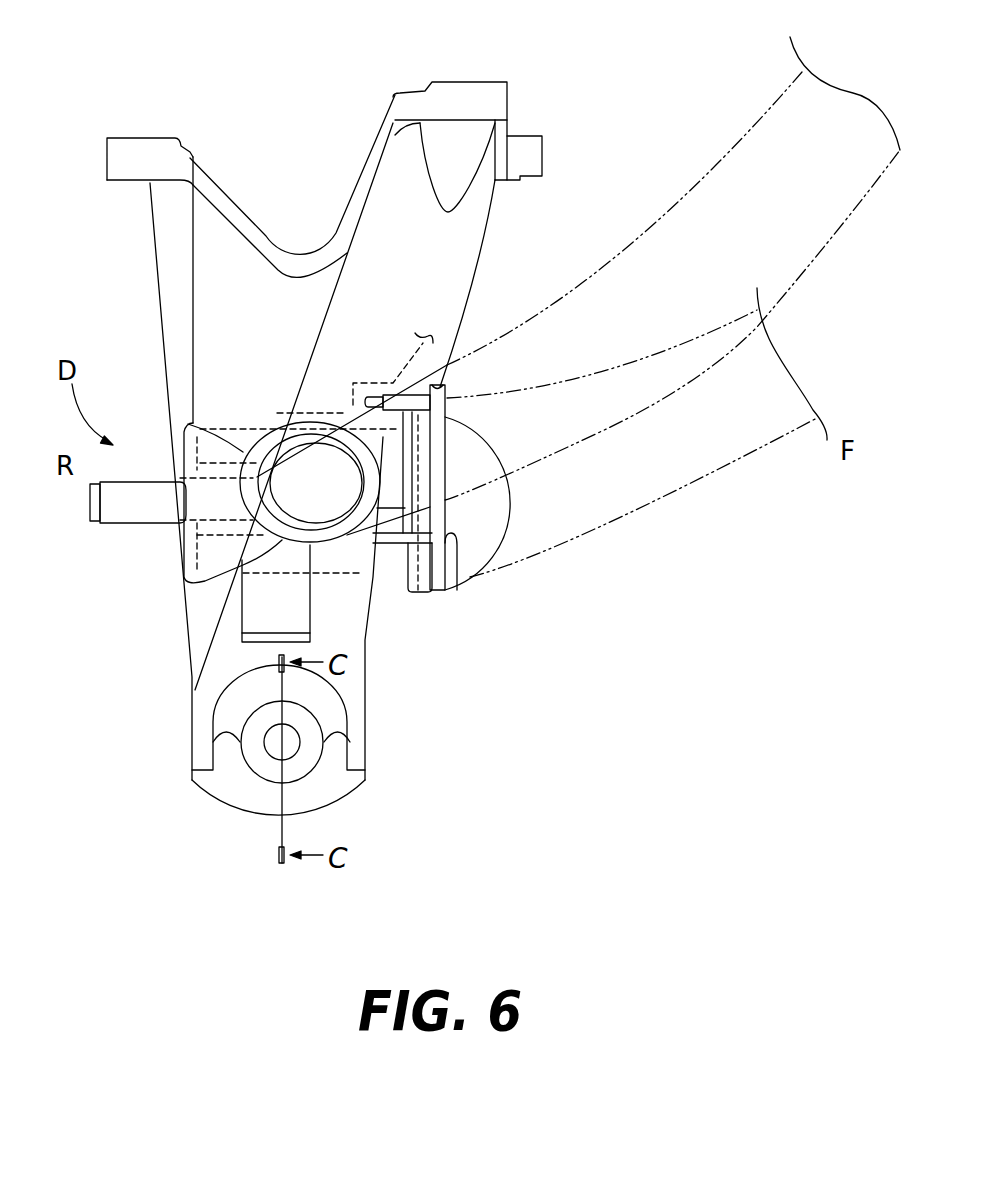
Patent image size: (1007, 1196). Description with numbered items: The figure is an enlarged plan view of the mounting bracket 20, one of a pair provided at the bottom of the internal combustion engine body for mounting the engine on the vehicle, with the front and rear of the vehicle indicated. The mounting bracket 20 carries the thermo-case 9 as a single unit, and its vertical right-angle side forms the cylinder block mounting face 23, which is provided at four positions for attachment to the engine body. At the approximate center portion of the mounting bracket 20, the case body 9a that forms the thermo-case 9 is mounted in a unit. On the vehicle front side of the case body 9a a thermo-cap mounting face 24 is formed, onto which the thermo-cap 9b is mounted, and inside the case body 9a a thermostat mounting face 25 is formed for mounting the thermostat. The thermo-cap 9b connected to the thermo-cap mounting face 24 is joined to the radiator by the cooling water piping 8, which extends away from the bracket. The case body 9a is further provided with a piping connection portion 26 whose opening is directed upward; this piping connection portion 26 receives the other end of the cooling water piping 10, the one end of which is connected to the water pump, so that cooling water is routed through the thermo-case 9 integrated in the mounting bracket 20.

The cooling water piping 8 is at (735, 468).
The thermo-case 9 is at (484, 540).
The case body 9a is at (422, 592).
The thermo-cap 9b is at (503, 532).
The cooling water piping 10 is at (780, 100).
The mounting bracket 20 is at (372, 756).
The cylinder block mounting face 23 is at (138, 148).
The thermo-cap mounting face 24 is at (447, 363).
The thermostat mounting face 25 is at (447, 397).
The piping connection portion 26 is at (270, 568).